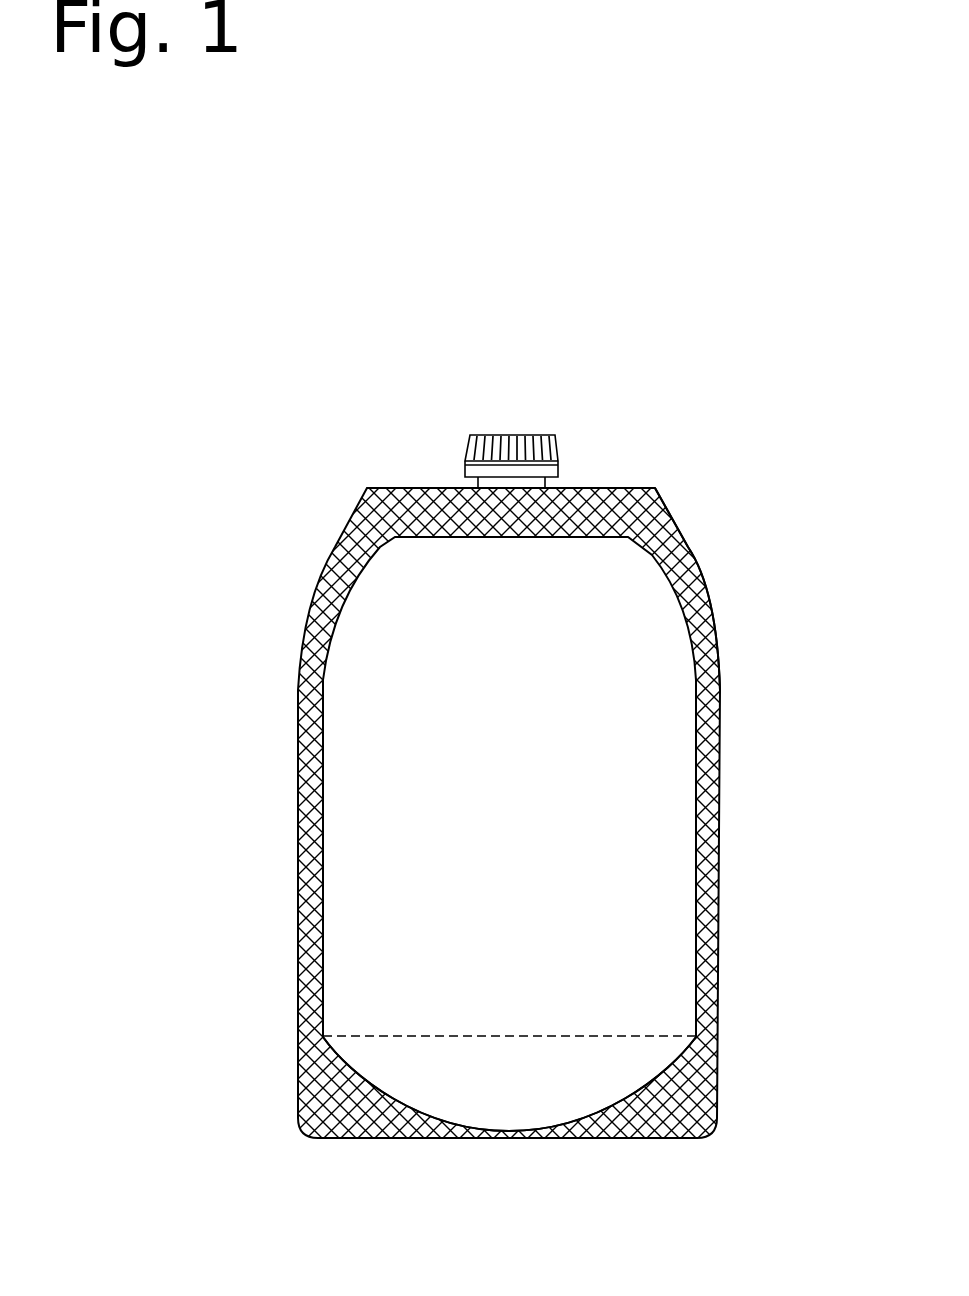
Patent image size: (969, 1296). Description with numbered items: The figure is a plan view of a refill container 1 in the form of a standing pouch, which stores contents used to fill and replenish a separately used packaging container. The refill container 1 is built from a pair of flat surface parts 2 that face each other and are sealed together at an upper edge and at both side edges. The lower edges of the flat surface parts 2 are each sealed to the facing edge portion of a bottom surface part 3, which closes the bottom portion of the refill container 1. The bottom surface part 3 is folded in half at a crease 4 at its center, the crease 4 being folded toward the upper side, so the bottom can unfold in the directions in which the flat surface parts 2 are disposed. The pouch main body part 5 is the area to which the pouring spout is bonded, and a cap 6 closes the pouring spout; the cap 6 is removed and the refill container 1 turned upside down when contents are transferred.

The refill container 1 is at (420, 375).
The flat surface parts 2 is at (657, 798).
The bottom surface part 3 is at (498, 1068).
The crease 4 is at (395, 1035).
The pouch main body part 5 is at (686, 537).
The cap 6 is at (525, 418).